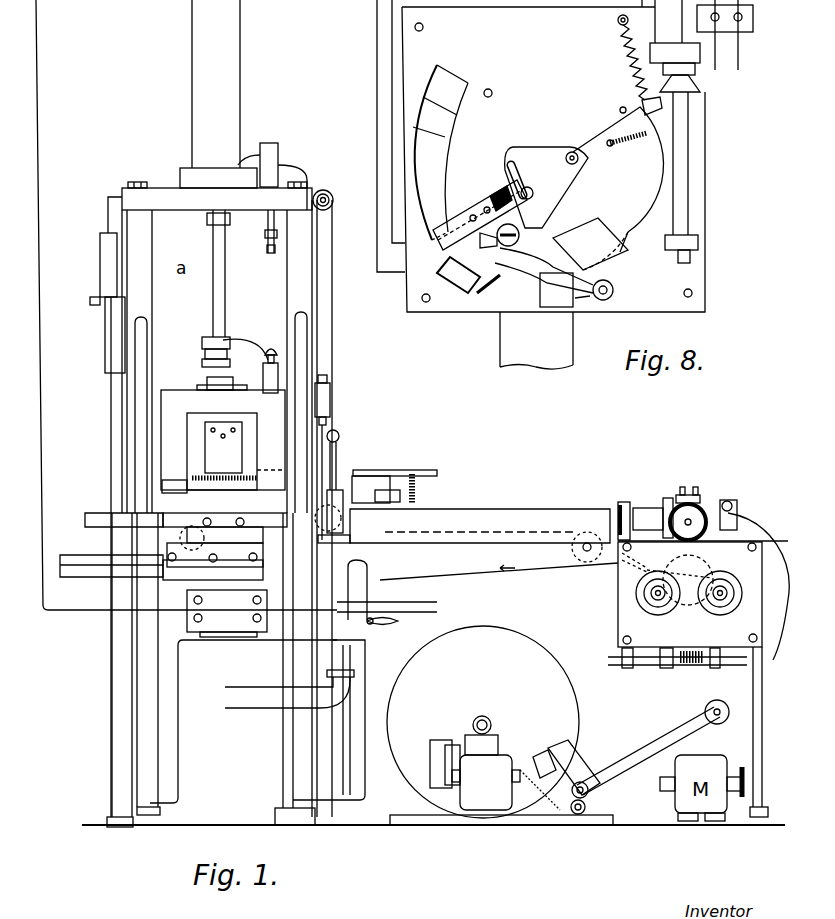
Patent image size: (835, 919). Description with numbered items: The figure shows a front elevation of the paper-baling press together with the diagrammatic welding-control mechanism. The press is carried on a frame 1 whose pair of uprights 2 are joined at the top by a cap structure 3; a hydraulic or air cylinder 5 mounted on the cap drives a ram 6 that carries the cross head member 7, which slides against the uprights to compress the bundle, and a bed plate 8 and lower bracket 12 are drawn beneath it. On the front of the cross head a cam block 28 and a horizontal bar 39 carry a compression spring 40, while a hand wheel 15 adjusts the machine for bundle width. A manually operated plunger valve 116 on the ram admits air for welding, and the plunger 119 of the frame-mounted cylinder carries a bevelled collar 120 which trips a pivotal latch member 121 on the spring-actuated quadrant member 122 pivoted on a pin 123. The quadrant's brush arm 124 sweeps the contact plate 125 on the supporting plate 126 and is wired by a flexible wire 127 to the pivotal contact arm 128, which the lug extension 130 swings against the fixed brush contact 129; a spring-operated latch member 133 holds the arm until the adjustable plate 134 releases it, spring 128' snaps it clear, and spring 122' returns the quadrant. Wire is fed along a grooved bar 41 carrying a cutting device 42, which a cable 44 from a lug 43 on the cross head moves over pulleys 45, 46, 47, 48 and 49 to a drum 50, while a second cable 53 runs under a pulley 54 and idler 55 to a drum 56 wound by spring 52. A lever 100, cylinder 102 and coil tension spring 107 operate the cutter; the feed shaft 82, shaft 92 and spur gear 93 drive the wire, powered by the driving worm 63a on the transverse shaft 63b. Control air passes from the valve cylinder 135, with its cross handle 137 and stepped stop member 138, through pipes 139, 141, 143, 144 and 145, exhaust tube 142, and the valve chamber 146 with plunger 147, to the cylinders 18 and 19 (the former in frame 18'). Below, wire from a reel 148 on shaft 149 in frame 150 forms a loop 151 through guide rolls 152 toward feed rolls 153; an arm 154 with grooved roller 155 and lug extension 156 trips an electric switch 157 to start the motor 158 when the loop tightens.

In FIG. 1, the frame 1 is at (294, 376).
In FIG. 1, the uprights 2 is at (133, 393).
In FIG. 1, the cap structure 3 is at (165, 197).
In FIG. 1, the hydraulic or air cylinder 5 is at (232, 38).
In FIG. 1, the piston rod or ram 6 is at (216, 240).
In FIG. 1, the cross head member 7 is at (190, 390).
In FIG. 1, the bed plate 8 is at (225, 517).
In FIG. 1, the lower bracket 12 is at (234, 563).
In FIG. 1, the hand wheel 15 is at (398, 621).
In FIG. 1, the cylinder 18 is at (283, 669).
In FIG. 1, the frame 18' is at (287, 713).
In FIG. 1, the cylinder 19 is at (148, 764).
In FIG. 1, the cam block 28 is at (160, 487).
In FIG. 1, the horizontal bar 39 is at (236, 451).
In FIG. 1, the compression spring 40 is at (216, 475).
In FIG. 1, the grooved bar 41 is at (485, 515).
In FIG. 1, the cutting device 42 is at (418, 500).
In FIG. 1, the lug 43 is at (331, 402).
In FIG. 1, the cable 44 is at (322, 283).
In FIG. 1, the pulley 45 is at (328, 192).
In FIG. 1, the pulley 46 is at (343, 521).
In FIG. 1, the pulley 47 is at (190, 532).
In FIG. 1, the idler pulley 48 is at (248, 518).
In FIG. 1, the pulley 49 is at (582, 562).
In FIG. 1, the drum 50 is at (655, 612).
In FIG. 1, the spring 52 is at (755, 606).
In FIG. 1, the cable 53 is at (326, 432).
In FIG. 1, the pulley 54 is at (370, 571).
In FIG. 1, the idler 55 is at (627, 570).
In FIG. 1, the drum 56 is at (716, 613).
In FIG. 1, the driving worm 63a is at (690, 667).
In FIG. 1, the transverse shaft 63b is at (637, 668).
In FIG. 1, the shaft 82 is at (690, 520).
In FIG. 1, the shaft 92 is at (645, 508).
In FIG. 1, the spur gear 93 is at (622, 503).
In FIG. 1, the lever 100 is at (392, 470).
In FIG. 1, the hydraulic or air cylinder 102 is at (395, 470).
In FIG. 1, the coil tension spring 107 is at (398, 478).
In FIG. 1, the manually operated plunger valve 116 is at (281, 347).
In FIG. 8, the plunger 119 is at (683, 183).
In FIG. 8, the bevelled collar 120 is at (693, 97).
In FIG. 8, the pivotal latch member 121 is at (660, 110).
In FIG. 8, the quadrant member 122 is at (621, 188).
In FIG. 8, the spring 122' is at (619, 57).
In FIG. 8, the pin 123 is at (580, 160).
In FIG. 8, the brush arm 124 is at (448, 224).
In FIG. 8, the contact plate 125 is at (446, 167).
In FIG. 1, the supporting plate 126 is at (105, 352).
In FIG. 8, the supporting plate 126 is at (553, 156).
In FIG. 8, the flexible wire 127 is at (570, 237).
In FIG. 8, the pivotal contact arm 128 is at (579, 277).
In FIG. 8, the spring 128' is at (603, 317).
In FIG. 8, the fixed brush contact 129 is at (478, 300).
In FIG. 8, the lug extension 130 is at (620, 250).
In FIG. 8, the spring-operated latch member 133 is at (496, 242).
In FIG. 8, the adjustable plate 134 is at (537, 182).
In FIG. 1, the valve cylinder 135 is at (352, 653).
In FIG. 1, the cross handle 137 is at (340, 437).
In FIG. 1, the stepped stop member 138 is at (346, 475).
In FIG. 1, the pipe 139 is at (313, 246).
In FIG. 1, the pipe 141 is at (40, 107).
In FIG. 1, the exhaust tube 142 is at (425, 648).
In FIG. 1, the pipe 143 is at (386, 592).
In FIG. 1, the pipe 144 is at (440, 780).
In FIG. 1, the pipe 145 is at (180, 752).
In FIG. 1, the valve chamber 146 is at (280, 155).
In FIG. 1, the plunger 147 is at (270, 250).
In FIG. 1, the reel 148 is at (573, 700).
In FIG. 1, the shaft 149 is at (484, 716).
In FIG. 1, the frame 150 is at (446, 822).
In FIG. 1, the loop 151 is at (764, 655).
In FIG. 1, the guide rolls 152 is at (600, 797).
In FIG. 1, the feed rolls 153 is at (735, 503).
In FIG. 1, the arm 154 is at (651, 740).
In FIG. 1, the grooved roller 155 is at (708, 722).
In FIG. 1, the lug extension 156 is at (572, 749).
In FIG. 1, the electric switch 157 is at (537, 748).
In FIG. 1, the motor 158 is at (486, 772).